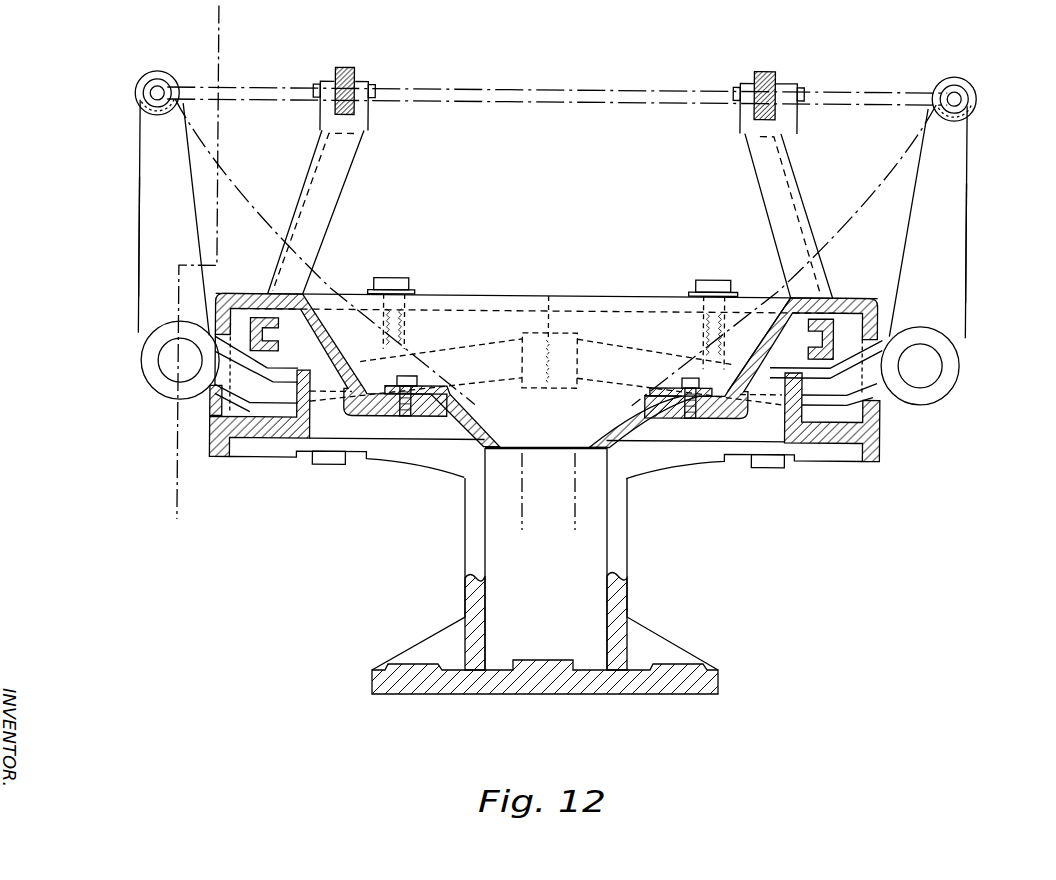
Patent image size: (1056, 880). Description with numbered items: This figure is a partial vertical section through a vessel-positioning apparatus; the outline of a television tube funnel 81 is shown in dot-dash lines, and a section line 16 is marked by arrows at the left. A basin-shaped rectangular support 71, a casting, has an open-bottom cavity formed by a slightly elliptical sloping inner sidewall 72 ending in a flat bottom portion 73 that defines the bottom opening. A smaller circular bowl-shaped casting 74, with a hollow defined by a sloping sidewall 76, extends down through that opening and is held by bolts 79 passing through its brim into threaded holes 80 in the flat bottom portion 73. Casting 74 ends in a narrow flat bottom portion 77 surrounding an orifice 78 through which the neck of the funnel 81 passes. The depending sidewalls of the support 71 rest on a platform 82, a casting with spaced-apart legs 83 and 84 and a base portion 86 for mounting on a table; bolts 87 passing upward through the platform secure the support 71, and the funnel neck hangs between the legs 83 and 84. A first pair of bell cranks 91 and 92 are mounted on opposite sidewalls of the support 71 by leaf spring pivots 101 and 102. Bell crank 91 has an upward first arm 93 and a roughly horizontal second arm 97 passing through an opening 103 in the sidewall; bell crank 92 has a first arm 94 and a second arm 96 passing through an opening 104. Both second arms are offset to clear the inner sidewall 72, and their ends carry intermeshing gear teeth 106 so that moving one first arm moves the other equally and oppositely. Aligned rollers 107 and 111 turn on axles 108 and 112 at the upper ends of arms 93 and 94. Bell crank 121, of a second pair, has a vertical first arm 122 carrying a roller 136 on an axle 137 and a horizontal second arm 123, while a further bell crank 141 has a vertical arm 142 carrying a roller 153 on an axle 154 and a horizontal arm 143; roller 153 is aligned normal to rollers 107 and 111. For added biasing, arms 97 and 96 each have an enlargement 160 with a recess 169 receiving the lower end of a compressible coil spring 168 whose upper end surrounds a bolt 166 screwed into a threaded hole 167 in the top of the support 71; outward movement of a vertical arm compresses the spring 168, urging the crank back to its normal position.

The section line 16- 16 is at (242, 36).
The support 71 is at (841, 293).
The sloping inner sidewall 72 is at (766, 328).
The flat bottom portion 73 is at (714, 420).
The bowl-shaped casting 74 is at (642, 427).
The sloping sidewall 76 is at (626, 433).
The narrow flat bottom portion 77 is at (498, 448).
The opening 78 is at (540, 455).
The bolts 79 is at (440, 381).
The holes 80 is at (405, 418).
The television tube funnel 81 is at (849, 93).
The platform 82 is at (211, 452).
The supporting upright 83 is at (476, 518).
The supporting upright 84 is at (623, 549).
The base portion 86 is at (700, 688).
The bolts 87 is at (775, 467).
The bell crank 91 is at (963, 320).
The bell crank 92 is at (137, 266).
The first arm 93 is at (950, 283).
The first arm 94 is at (147, 218).
The second arm 96 is at (278, 384).
The second arm 97 is at (866, 430).
The leaf spring pivot 101 is at (951, 389).
The leaf spring pivot 102 is at (143, 372).
The opening 103 is at (867, 396).
The opening 104 is at (214, 400).
The gear teeth 106 is at (548, 296).
The roller 107 is at (964, 86).
The axle 108 is at (959, 99).
The roller 111 is at (137, 83).
The axle 112 is at (148, 98).
The bell crank 121 is at (801, 190).
The first arm 122 is at (770, 185).
The second arm 123 is at (834, 333).
The roller 136 is at (763, 72).
The axle 137 is at (736, 93).
The bell crank 141 is at (339, 196).
The first vertically extending arm 142 is at (318, 219).
The second horizontally extending arm 143 is at (256, 320).
The roller 153 is at (343, 70).
The axle 154 is at (378, 92).
The enlargement 160 is at (682, 358).
The bolt 166 is at (714, 277).
The hole 167 is at (686, 296).
The compressible coil spring 168 is at (700, 330).
The recess 169 is at (719, 342).